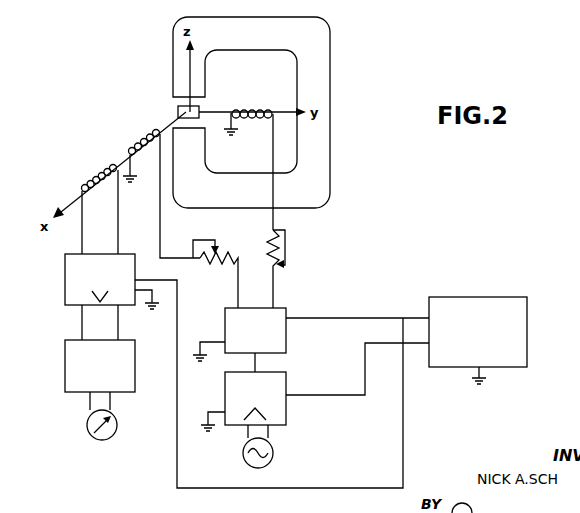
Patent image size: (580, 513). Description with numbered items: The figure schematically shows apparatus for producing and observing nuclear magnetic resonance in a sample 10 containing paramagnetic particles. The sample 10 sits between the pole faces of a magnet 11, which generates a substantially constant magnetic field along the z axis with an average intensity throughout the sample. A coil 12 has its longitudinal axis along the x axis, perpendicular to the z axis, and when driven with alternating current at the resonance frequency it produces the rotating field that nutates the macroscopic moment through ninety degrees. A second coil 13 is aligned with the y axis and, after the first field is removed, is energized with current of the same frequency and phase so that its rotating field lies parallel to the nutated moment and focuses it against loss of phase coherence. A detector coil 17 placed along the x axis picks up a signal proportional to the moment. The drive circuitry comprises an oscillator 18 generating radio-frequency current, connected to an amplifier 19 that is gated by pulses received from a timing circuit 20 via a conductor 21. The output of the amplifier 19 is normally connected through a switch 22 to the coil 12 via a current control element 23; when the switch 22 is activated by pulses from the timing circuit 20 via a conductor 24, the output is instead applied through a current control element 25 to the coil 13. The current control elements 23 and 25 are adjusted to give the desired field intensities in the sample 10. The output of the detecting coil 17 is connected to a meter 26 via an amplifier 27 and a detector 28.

The sample 10 is at (199, 108).
The magnet 11 is at (297, 68).
The coil 12 is at (148, 139).
The coil 13 is at (249, 109).
The detector coil 17 is at (106, 174).
The oscillator 18 is at (243, 461).
The amplifier 19 is at (225, 390).
The timing circuit 20 is at (527, 352).
The conductor 21 is at (360, 395).
The switch 22 is at (286, 348).
The current control element 23 is at (233, 257).
The conductor 24 is at (330, 318).
The current control element 25 is at (285, 268).
The meter 26 is at (87, 431).
The amplifier 27 is at (65, 283).
The detector 28 is at (65, 376).